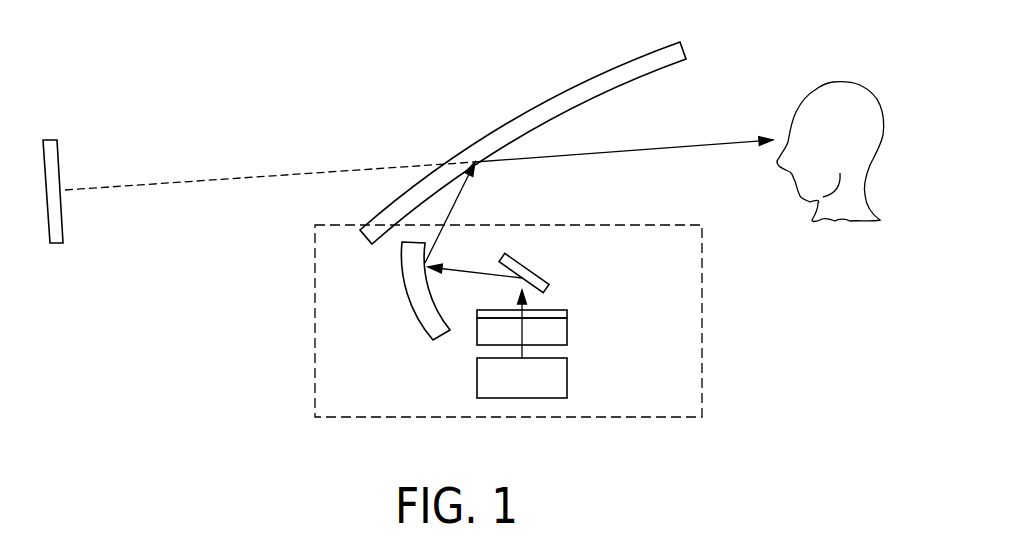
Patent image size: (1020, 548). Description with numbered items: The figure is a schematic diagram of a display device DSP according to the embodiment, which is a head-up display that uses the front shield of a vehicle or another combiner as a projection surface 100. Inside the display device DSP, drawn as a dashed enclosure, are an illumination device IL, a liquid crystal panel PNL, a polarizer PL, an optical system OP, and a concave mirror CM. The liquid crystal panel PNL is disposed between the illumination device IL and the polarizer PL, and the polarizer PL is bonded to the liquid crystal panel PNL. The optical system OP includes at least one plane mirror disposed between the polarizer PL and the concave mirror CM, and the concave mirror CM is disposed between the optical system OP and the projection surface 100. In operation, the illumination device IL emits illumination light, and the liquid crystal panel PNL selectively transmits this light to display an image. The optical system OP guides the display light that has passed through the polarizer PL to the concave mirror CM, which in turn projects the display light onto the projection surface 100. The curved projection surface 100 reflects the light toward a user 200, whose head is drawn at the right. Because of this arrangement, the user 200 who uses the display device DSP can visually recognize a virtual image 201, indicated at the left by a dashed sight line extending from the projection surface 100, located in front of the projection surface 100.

The projection surface 100 is at (618, 67).
The user 200 is at (833, 82).
The virtual image 201 is at (57, 140).
The display device DSP is at (703, 333).
The concave mirror CM is at (410, 296).
The optical system OP is at (544, 262).
The polarizer PL is at (567, 312).
The liquid crystal panel PNL is at (567, 331).
The illumination device IL is at (567, 382).